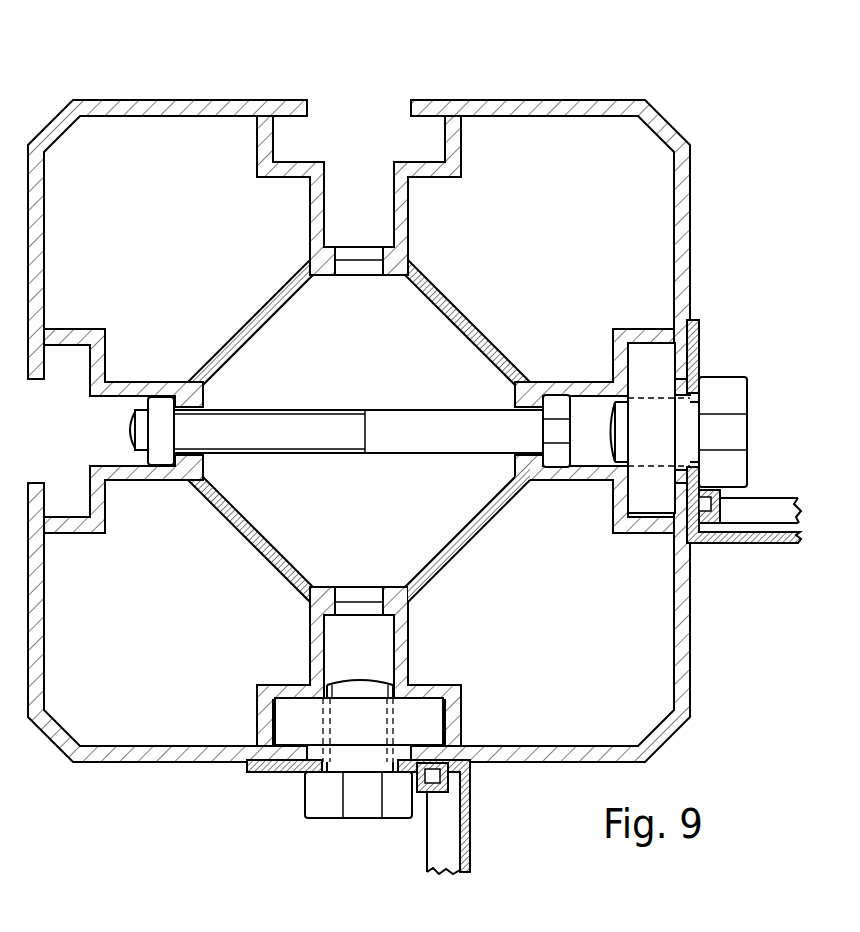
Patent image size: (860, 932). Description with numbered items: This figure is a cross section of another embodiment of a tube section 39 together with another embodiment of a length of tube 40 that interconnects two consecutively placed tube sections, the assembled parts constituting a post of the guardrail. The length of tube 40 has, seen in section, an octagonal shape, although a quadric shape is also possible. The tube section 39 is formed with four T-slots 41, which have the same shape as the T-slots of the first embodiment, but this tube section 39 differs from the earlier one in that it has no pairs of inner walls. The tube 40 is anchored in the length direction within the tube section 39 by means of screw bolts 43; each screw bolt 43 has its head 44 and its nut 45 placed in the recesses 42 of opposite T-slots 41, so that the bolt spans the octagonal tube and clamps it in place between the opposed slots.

The tube section 39 is at (359, 391).
The length of tube 40 is at (451, 532).
The T-slot 41 is at (359, 159).
The recess 42 is at (394, 226).
The screw bolt 43 is at (359, 395).
The head 44 is at (559, 391).
The nut 45 is at (115, 433).